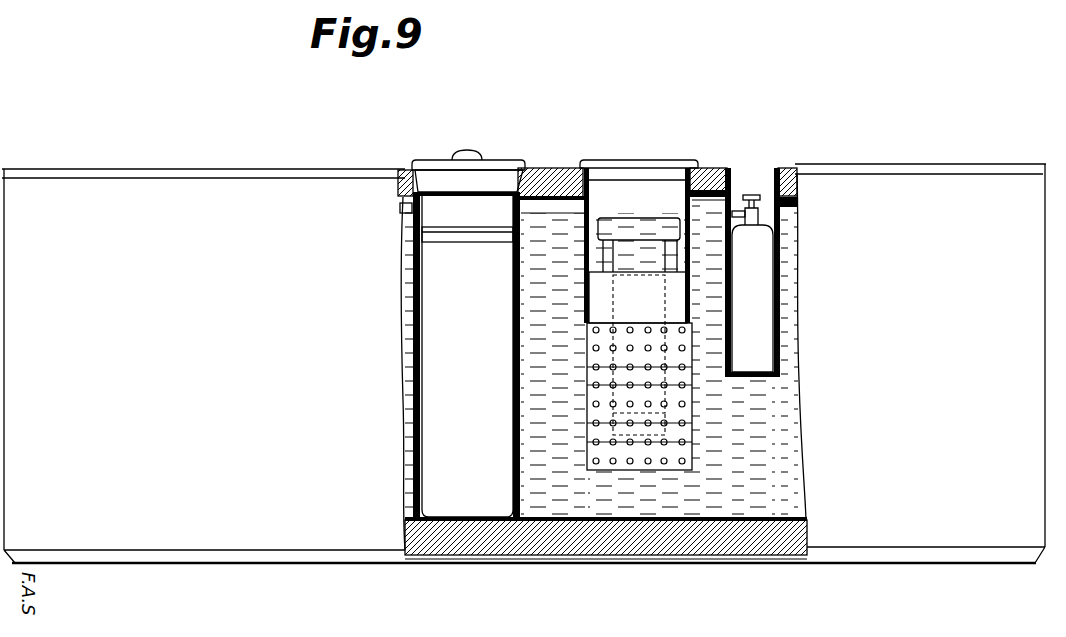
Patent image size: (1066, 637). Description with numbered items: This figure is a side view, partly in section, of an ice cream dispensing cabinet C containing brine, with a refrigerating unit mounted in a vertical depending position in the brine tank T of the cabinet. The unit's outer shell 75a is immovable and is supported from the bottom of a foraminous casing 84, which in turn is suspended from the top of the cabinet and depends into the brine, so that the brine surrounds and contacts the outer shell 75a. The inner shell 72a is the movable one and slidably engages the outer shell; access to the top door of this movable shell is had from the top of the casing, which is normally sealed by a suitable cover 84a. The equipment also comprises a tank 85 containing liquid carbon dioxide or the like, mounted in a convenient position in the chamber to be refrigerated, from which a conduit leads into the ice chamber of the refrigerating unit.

The ice cream dispensing cabinet C is at (302, 535).
The brine tank T is at (542, 240).
The cover 84a is at (617, 172).
The inner shell 72a is at (622, 257).
The outer shell 75a is at (592, 283).
The foraminous casing 84 is at (592, 373).
The tank 85 is at (753, 305).